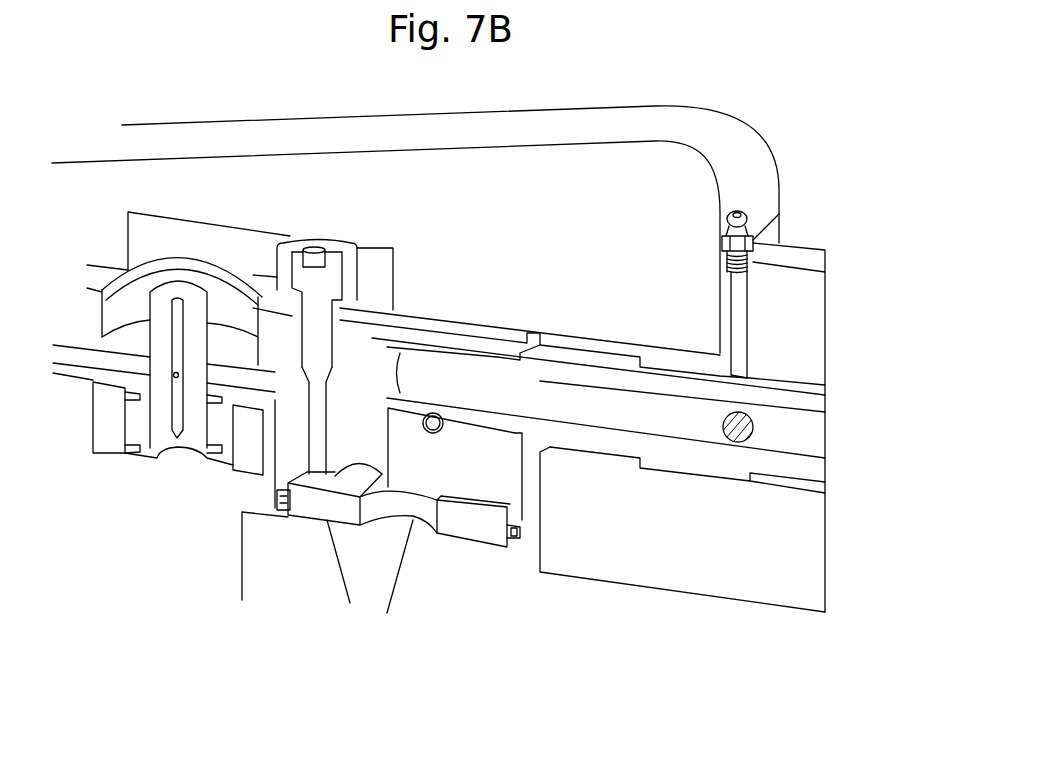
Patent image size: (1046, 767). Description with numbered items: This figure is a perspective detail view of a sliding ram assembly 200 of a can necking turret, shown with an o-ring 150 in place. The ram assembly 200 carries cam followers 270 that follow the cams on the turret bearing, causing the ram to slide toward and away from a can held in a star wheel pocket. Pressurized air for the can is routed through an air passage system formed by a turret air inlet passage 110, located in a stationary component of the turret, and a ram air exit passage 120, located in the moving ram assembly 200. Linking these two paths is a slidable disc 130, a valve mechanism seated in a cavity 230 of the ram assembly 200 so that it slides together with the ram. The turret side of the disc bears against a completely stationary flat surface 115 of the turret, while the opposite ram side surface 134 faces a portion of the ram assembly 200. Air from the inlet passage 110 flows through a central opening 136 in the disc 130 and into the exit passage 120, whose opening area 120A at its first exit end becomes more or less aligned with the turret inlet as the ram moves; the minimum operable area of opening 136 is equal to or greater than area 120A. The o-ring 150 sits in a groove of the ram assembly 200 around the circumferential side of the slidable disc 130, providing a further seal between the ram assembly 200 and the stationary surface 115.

The ram assembly 200 is at (172, 106).
The cam follower 270 is at (106, 429).
The flat surface 115 is at (262, 498).
The turret air inlet passage 110 is at (370, 575).
The ram side surface 134 is at (339, 481).
The opening 136 is at (426, 523).
The slidable disc 130 is at (466, 532).
The cavity 230 is at (500, 518).
The o-ring 150 is at (520, 532).
The ram air exit passage 120 is at (681, 420).
The cross-sectional area of the ram air exit passage 120A is at (755, 425).